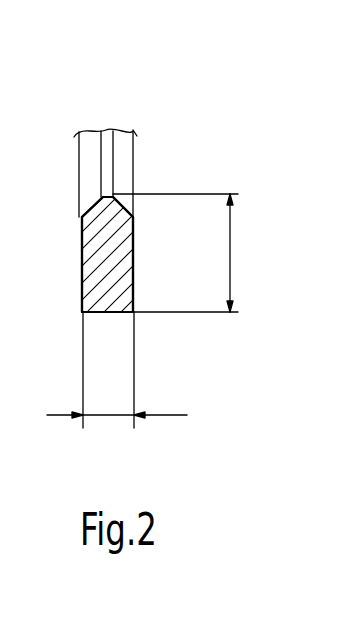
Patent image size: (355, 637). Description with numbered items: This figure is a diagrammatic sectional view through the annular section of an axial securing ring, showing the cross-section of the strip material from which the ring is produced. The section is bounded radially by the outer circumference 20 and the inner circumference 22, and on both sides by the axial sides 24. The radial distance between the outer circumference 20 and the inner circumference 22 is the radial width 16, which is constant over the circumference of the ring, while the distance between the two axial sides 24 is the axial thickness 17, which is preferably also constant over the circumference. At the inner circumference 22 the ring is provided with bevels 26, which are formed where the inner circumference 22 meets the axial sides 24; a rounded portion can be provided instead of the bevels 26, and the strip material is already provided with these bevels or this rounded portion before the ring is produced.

The radial width 16 is at (234, 247).
The axial thickness 17 is at (105, 417).
The outer circumference 20 is at (105, 313).
The inner circumference 22 is at (110, 133).
The axial sides 24 is at (82, 263).
The bevels 26 is at (92, 203).